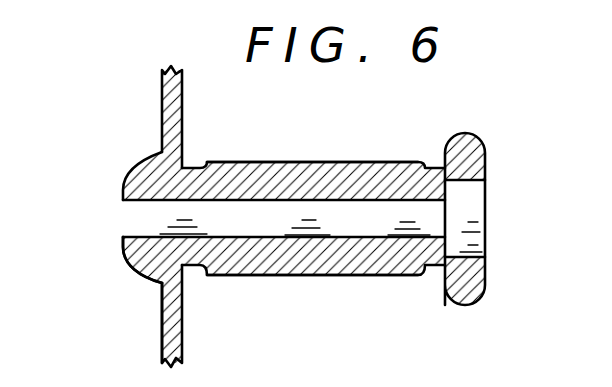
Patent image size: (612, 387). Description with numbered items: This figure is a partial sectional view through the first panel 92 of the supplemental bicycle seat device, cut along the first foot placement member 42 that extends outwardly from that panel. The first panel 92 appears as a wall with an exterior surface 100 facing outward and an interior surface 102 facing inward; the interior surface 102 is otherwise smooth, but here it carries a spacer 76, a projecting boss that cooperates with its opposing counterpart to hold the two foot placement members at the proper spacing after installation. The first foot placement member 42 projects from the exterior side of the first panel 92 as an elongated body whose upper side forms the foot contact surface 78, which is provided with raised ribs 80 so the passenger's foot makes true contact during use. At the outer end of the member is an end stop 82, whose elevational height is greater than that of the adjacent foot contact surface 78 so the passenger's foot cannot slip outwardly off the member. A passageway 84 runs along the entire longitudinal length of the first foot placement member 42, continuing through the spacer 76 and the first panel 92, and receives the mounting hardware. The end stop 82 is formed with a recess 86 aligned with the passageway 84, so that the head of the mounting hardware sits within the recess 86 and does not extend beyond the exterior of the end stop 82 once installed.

The first foot placement member 42 is at (364, 276).
The spacer 76 is at (137, 262).
The foot contact surface 78 is at (362, 160).
The raised ribs 80 is at (269, 162).
The end stop 82 is at (470, 133).
The passageway 84 is at (137, 209).
The recess 86 is at (470, 196).
The first panel 92 is at (182, 118).
The exterior surface 100 is at (182, 335).
The interior surface 102 is at (162, 325).